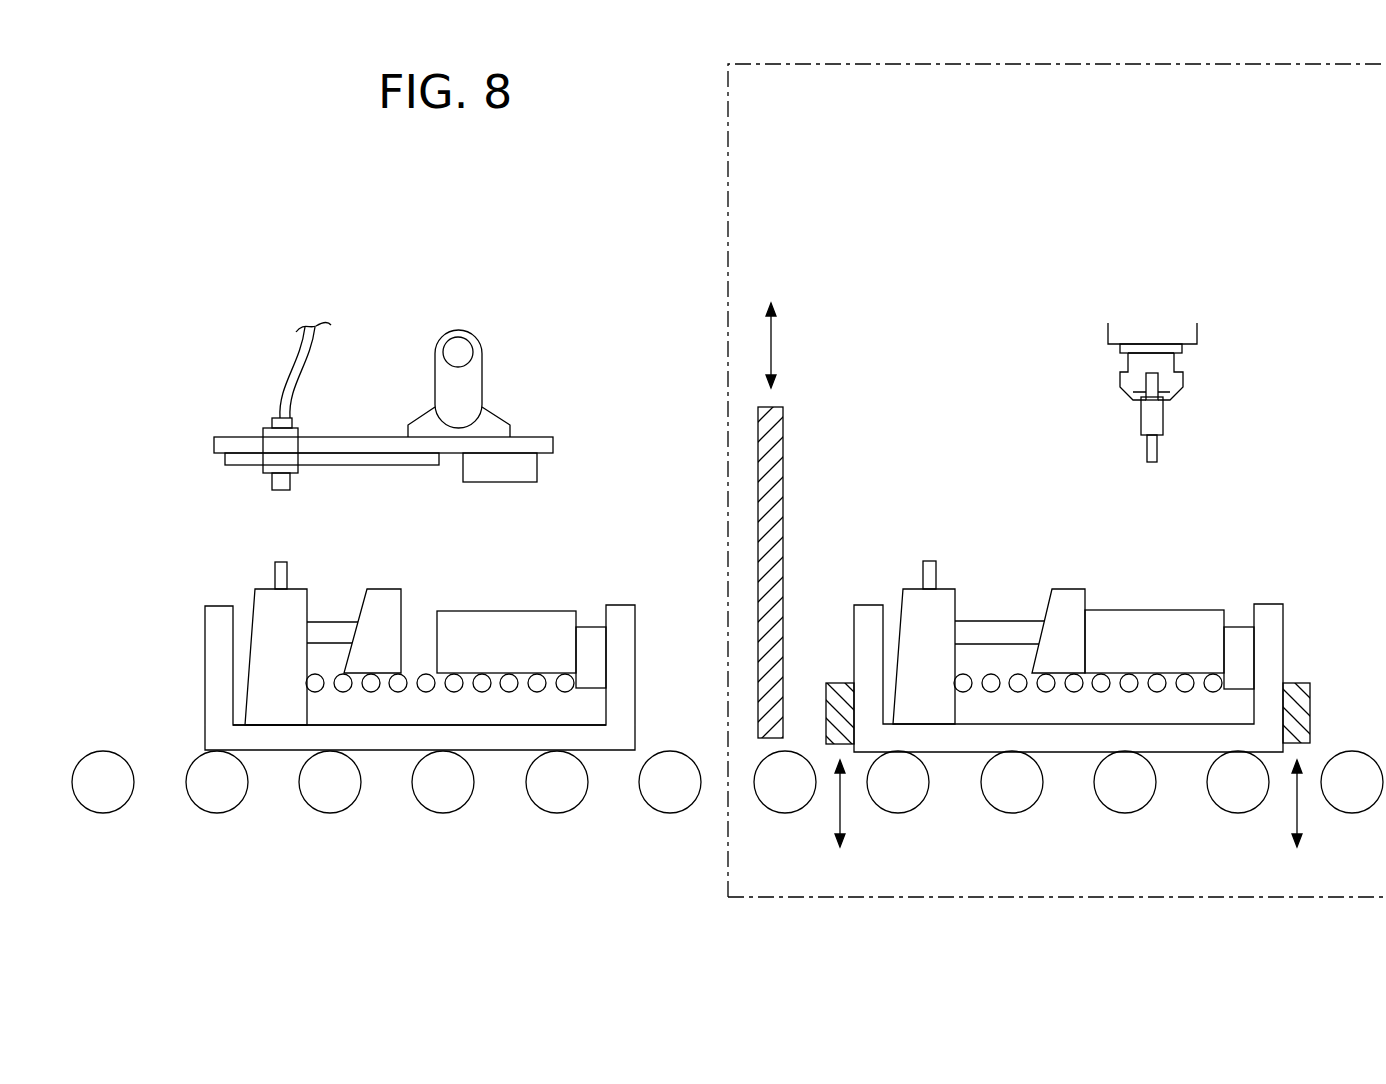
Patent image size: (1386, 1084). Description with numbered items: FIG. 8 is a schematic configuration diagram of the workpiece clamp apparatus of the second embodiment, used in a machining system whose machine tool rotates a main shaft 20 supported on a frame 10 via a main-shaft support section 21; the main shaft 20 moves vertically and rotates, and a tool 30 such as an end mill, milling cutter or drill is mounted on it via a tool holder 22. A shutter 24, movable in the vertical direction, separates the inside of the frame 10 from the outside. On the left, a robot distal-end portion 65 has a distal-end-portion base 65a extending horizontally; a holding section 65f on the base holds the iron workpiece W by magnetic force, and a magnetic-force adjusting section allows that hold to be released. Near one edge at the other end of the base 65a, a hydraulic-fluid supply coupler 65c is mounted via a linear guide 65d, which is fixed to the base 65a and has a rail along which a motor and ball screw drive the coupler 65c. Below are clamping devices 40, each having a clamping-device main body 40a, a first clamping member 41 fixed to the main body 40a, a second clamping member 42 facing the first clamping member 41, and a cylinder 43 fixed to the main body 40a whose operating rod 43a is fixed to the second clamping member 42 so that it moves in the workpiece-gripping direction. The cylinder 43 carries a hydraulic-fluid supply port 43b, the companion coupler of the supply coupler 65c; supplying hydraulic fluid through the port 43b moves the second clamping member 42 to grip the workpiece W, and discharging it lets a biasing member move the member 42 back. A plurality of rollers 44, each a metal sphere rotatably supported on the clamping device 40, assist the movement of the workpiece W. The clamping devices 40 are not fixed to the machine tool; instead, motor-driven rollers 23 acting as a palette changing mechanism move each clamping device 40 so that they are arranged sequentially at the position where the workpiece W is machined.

The frame 10 is at (728, 250).
The main shaft 20 is at (1120, 349).
The main-shaft support section 21 is at (1197, 331).
The tool holder 22 is at (1174, 365).
The rollers 23 is at (557, 813).
The shutter 24 is at (783, 462).
The tool 30 is at (1163, 420).
The clamping device 40 is at (636, 598).
The clamping-device main body 40a is at (205, 710).
The first clamping member 41 is at (590, 627).
The second clamping member 42 is at (386, 589).
The cylinder 43 is at (250, 665).
The operating rod 43a is at (327, 622).
The hydraulic-fluid supply port 43b is at (275, 572).
The rollers 44 is at (398, 692).
The distal-end portion 65 is at (484, 384).
The distal-end-portion base 65a is at (553, 446).
The hydraulic-fluid supply coupler 65c is at (262, 430).
The linear guide 65d is at (225, 459).
The holding section 65f is at (537, 471).
The workpiece W is at (497, 611).